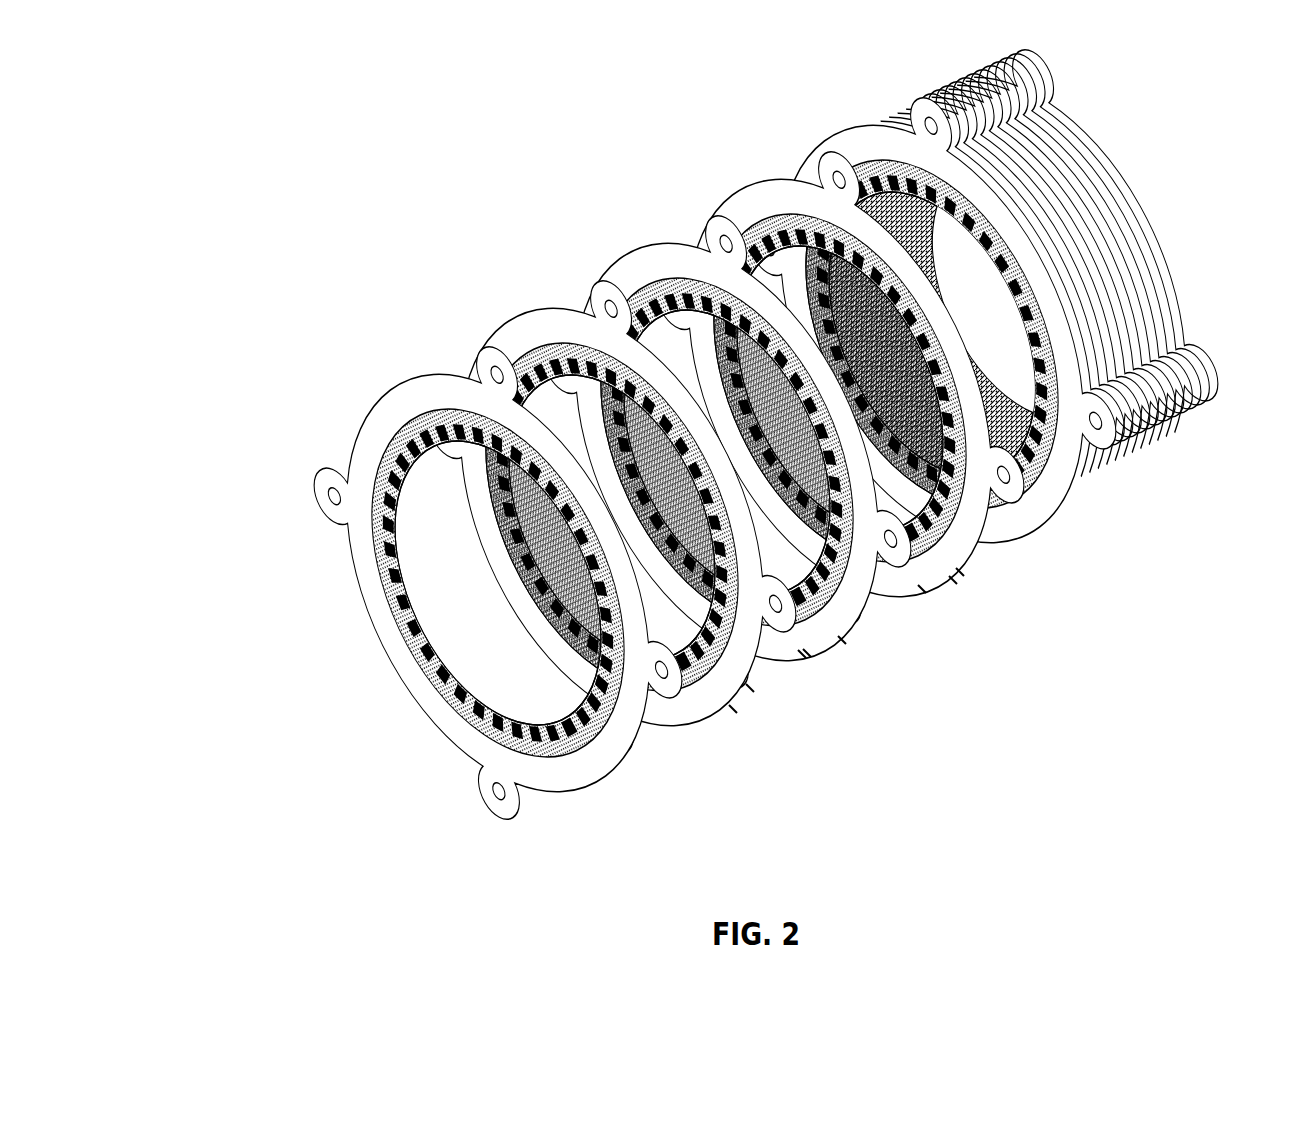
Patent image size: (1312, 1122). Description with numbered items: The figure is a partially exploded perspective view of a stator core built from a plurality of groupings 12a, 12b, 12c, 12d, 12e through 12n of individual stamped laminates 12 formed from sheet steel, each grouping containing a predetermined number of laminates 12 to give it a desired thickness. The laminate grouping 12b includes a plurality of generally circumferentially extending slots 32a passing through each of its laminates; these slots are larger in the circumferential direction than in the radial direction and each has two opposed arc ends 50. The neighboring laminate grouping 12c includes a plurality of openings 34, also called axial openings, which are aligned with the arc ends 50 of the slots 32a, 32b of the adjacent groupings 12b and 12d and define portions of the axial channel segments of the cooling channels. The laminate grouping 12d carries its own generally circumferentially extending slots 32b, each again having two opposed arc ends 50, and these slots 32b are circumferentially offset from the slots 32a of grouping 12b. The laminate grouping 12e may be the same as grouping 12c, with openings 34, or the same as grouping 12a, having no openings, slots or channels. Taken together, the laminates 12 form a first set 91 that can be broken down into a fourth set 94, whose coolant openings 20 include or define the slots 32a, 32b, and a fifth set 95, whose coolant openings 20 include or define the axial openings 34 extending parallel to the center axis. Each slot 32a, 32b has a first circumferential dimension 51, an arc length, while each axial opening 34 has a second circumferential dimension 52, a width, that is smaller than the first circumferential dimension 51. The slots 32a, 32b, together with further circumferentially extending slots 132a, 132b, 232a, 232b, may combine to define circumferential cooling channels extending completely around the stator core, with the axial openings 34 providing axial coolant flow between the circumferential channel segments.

The stamped laminate 12 is at (656, 561).
The first set 91 is at (656, 561).
The fourth set 94 is at (656, 561).
The fifth set 95 is at (415, 155).
The laminate grouping 12a is at (397, 382).
The laminate grouping 12b is at (530, 318).
The laminate grouping 12c is at (645, 240).
The laminate grouping 12d is at (750, 185).
The laminate grouping 12e is at (830, 130).
The laminate grouping 12n is at (1100, 175).
The arc end 50 is at (733, 710).
The coolant opening 20 is at (926, 759).
The generally circumferentially extending slot 32a is at (926, 759).
The first circumferential dimension 51 is at (926, 759).
The circumferentially extending slot 132a is at (926, 759).
The circumferentially extending slot 232a is at (750, 688).
The opening 34 is at (893, 696).
The second circumferential dimension 52 is at (842, 640).
The generally circumferentially extending slot 32b is at (1104, 646).
The circumferentially extending slot 132b is at (1104, 646).
The circumferentially extending slot 232b is at (953, 580).